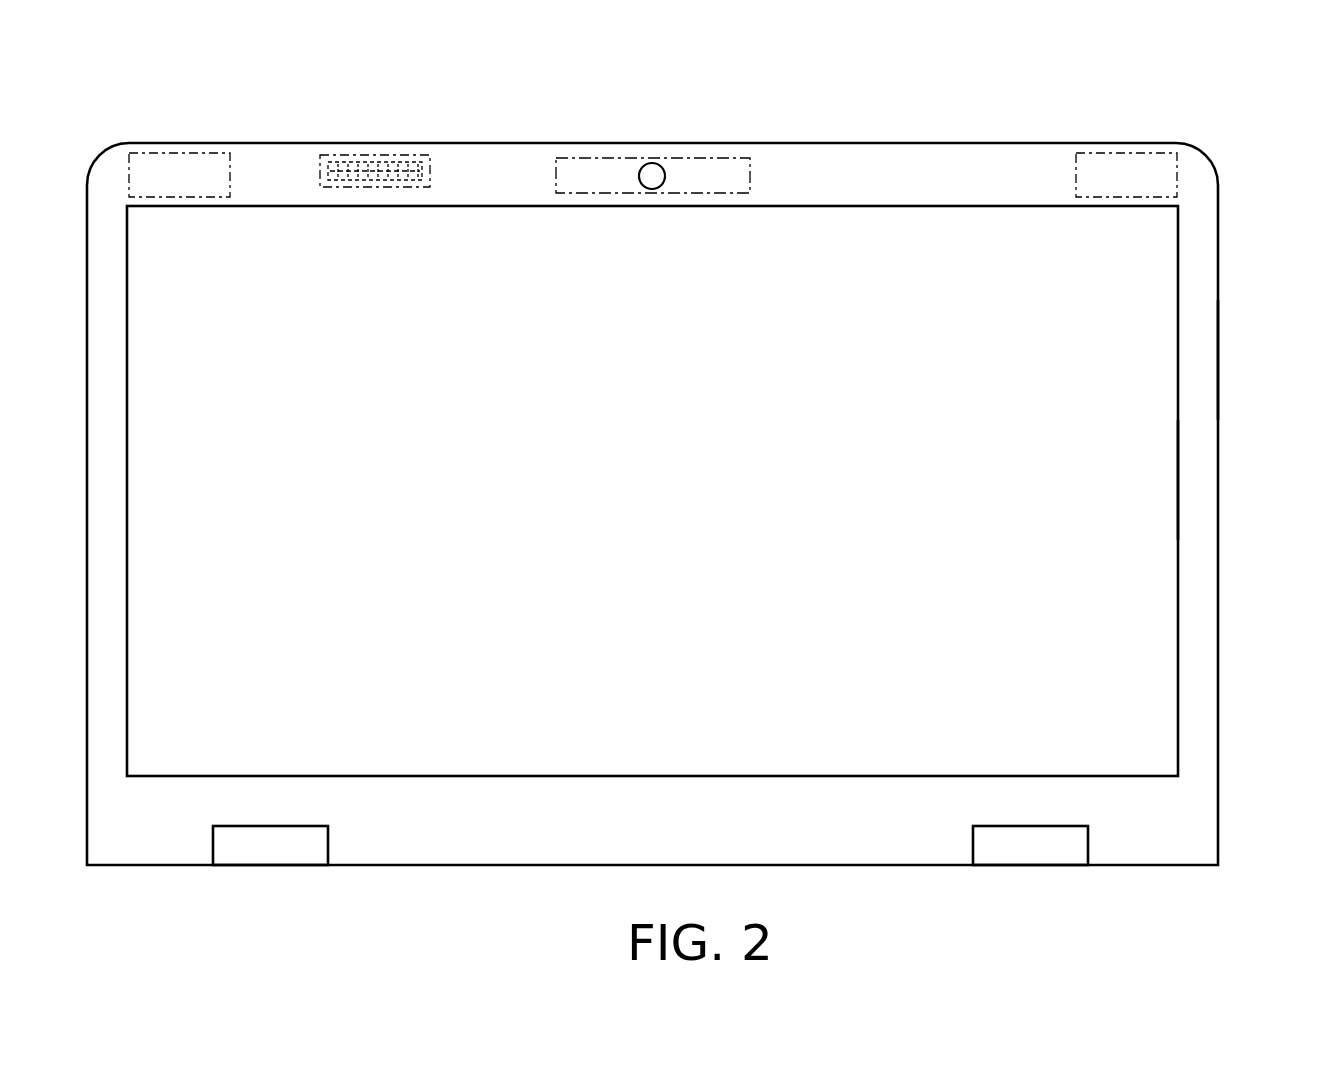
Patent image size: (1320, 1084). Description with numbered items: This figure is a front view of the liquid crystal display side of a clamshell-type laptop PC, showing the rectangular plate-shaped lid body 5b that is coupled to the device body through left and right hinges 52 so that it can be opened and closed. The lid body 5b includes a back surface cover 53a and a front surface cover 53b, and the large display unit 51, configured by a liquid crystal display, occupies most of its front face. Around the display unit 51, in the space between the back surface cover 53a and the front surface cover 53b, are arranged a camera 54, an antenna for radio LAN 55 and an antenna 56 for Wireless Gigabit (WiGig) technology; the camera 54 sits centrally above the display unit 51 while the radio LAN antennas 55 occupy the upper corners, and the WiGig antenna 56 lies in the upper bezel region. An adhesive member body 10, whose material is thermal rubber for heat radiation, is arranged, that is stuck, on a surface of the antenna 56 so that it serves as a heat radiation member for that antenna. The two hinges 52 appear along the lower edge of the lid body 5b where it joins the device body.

The lid body 5b is at (769, 121).
The adhesive member body 10 is at (402, 162).
The display unit 51 is at (500, 252).
The hinges 52 is at (271, 845).
The back surface cover 53a is at (1218, 353).
The front surface cover 53b is at (1195, 473).
The camera 54 is at (665, 178).
The antenna for radio LAN 55 is at (176, 153).
The antenna for Wireless Gigabit technology 56 is at (347, 155).